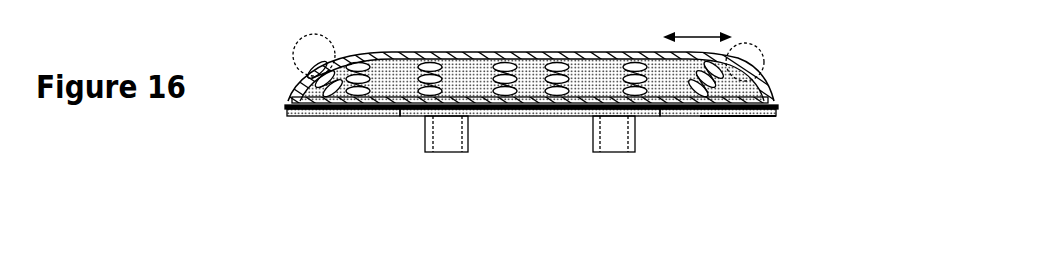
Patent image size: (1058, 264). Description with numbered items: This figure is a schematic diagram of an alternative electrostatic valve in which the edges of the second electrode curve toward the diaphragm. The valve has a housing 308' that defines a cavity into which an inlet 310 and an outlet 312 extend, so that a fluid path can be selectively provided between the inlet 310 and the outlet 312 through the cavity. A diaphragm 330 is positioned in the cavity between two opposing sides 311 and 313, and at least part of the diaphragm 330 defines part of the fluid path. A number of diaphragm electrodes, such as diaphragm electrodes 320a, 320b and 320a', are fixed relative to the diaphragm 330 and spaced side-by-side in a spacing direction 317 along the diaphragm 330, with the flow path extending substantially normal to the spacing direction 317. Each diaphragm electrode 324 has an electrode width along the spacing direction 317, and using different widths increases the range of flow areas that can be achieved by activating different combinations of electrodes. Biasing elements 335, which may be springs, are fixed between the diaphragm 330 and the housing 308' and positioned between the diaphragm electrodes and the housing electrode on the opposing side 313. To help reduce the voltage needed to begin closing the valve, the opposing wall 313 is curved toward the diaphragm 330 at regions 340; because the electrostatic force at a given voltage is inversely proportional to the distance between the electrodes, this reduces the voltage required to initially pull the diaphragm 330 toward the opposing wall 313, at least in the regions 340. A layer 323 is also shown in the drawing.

The housing 308' is at (585, 84).
The inlet 310 is at (447, 153).
The opposing side 311 is at (665, 115).
The outlet 312 is at (617, 153).
The opposing side 313 is at (406, 52).
The spacing direction 317 is at (697, 25).
The diaphragm electrode 320a is at (311, 137).
The diaphragm electrode 320a' is at (761, 135).
The diaphragm electrode 320b is at (550, 116).
The core 323 is at (585, 53).
The diaphragm electrode 324 is at (712, 115).
The diaphragm 330 is at (378, 116).
The biasing element 335 is at (503, 116).
The region 340 is at (294, 56).